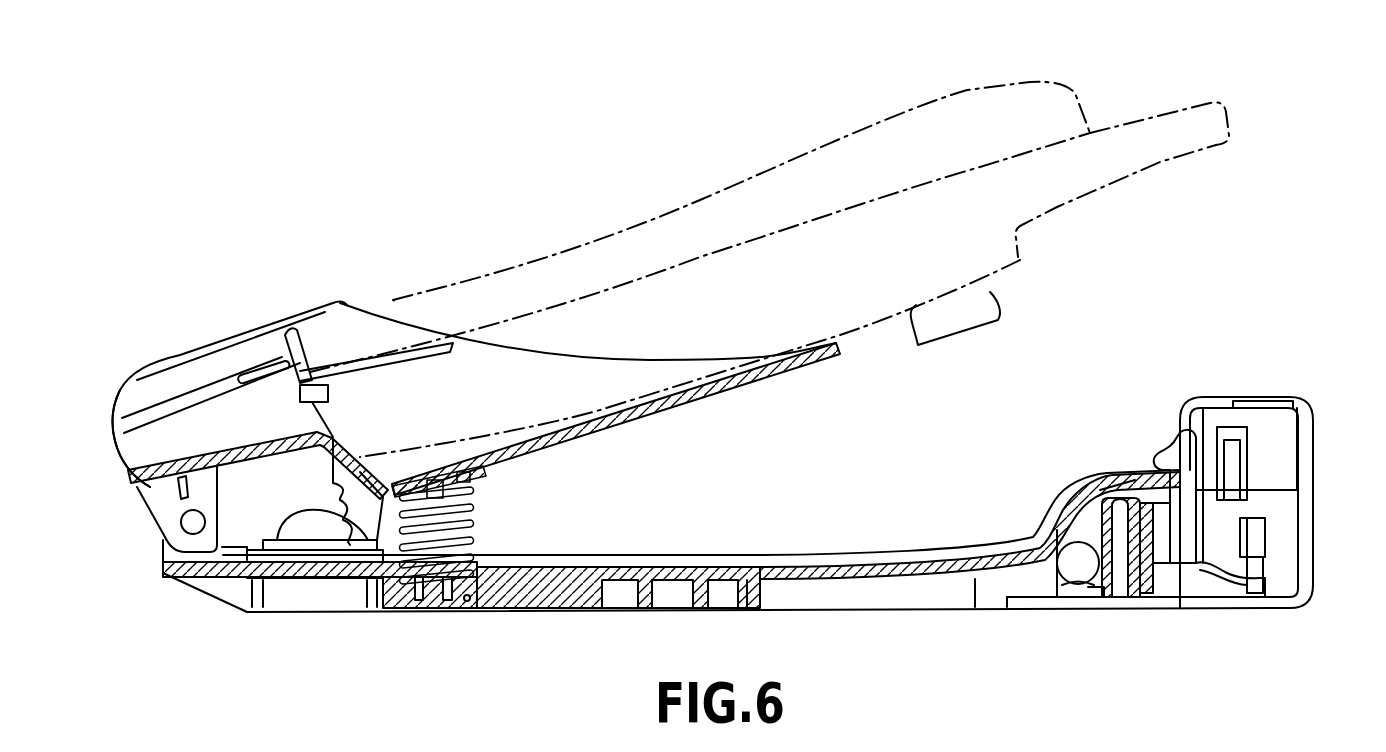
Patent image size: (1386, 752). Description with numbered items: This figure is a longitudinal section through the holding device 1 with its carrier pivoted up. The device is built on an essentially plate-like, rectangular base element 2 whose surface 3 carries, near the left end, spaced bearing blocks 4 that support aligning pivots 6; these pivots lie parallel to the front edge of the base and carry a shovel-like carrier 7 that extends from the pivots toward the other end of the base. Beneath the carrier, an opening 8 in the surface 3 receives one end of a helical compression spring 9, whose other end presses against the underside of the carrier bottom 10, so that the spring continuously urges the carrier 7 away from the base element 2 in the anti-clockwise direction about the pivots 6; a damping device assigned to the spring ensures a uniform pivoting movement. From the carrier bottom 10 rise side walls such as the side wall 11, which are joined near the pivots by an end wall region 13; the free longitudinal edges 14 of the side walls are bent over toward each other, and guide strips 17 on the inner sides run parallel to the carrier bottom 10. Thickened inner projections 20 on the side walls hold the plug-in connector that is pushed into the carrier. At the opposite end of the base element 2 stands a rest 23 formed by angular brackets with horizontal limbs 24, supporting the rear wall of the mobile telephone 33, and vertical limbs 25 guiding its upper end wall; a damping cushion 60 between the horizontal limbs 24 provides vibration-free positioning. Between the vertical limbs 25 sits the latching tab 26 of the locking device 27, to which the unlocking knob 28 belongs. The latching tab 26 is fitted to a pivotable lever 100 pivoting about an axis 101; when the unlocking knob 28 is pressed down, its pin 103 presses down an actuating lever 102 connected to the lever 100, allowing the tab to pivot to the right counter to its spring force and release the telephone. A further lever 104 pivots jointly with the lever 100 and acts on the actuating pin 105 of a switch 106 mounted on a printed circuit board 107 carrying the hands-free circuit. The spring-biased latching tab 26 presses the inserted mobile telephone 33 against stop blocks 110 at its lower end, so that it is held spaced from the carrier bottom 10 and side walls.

The holding device 1 is at (515, 240).
The base element 2 is at (757, 610).
The surface 3 is at (815, 556).
The bearing block 4 is at (177, 548).
The aligning pivot 6 is at (183, 520).
The carrier 7 is at (160, 345).
The opening 8 is at (470, 572).
The compression spring 9 is at (473, 510).
The carrier bottom 10 is at (690, 402).
The side wall 11 is at (543, 363).
The end wall region 13 is at (112, 407).
The free longitudinal edge 14 is at (238, 343).
The guide strip 17 is at (400, 368).
The thickened inner projection 20 is at (142, 398).
The rest 23 is at (1090, 505).
The horizontal limb 24 is at (1157, 477).
The vertical limb 25 is at (1180, 405).
The latching tab 26 is at (1158, 453).
The locking device 27 is at (1258, 312).
The unlocking knob 28 is at (1247, 395).
The mobile telephone 33 is at (808, 152).
The damping cushion 60 is at (1123, 481).
The pivotable lever 100 is at (1173, 495).
The axis 101 is at (1195, 563).
The actuating lever 102 is at (1243, 503).
The pin 103 is at (1230, 457).
The further lever 104 is at (1233, 597).
The actuating pin 105 is at (1263, 563).
The switch 106 is at (1253, 543).
The printed circuit board 107 is at (1240, 487).
The stop block 110 is at (292, 368).